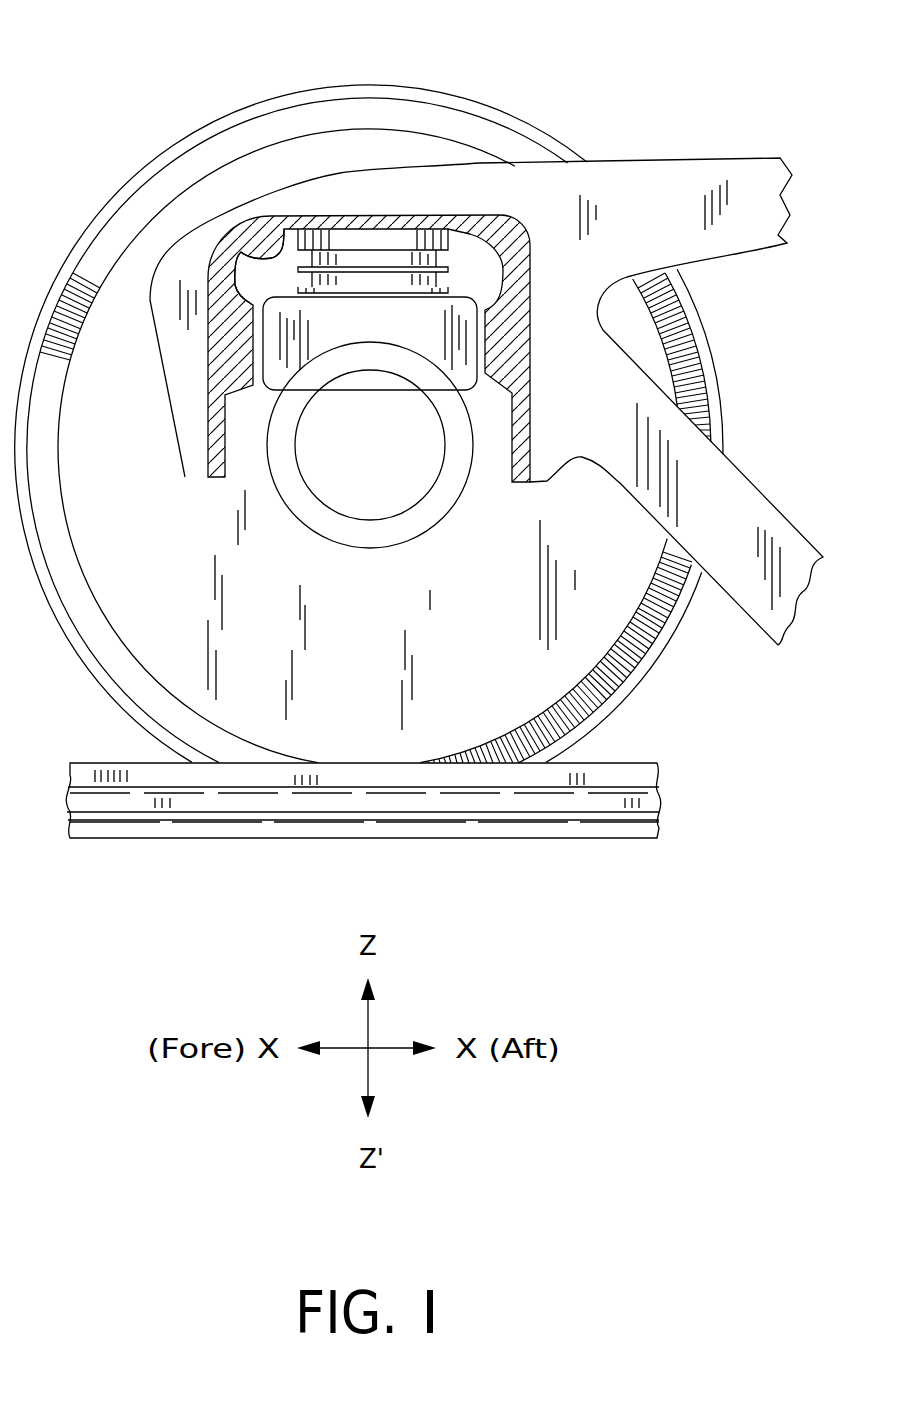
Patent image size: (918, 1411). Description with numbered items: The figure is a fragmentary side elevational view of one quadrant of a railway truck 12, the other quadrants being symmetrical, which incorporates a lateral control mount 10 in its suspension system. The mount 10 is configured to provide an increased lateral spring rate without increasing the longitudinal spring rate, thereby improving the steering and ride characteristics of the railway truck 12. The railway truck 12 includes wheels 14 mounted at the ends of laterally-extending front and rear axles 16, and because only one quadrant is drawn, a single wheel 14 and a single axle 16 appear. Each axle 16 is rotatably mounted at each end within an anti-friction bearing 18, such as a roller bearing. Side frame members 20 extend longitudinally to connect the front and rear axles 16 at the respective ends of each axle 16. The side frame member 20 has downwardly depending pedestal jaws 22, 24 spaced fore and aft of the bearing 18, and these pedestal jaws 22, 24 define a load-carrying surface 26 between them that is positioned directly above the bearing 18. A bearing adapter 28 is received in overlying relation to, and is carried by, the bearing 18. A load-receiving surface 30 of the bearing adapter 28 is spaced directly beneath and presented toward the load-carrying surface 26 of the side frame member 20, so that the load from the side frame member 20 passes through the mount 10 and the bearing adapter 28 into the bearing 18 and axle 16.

The mount 10 is at (388, 240).
The railway truck 12 is at (528, 72).
The wheels 14 is at (482, 672).
The axles 16 is at (395, 490).
The anti-friction bearing 18 is at (318, 520).
The side frame members 20 is at (683, 157).
The pedestal jaw 22 is at (187, 433).
The pedestal jaw 24 is at (580, 460).
The load-carrying surface 26 is at (247, 251).
The bearing adapter 28 is at (463, 342).
The load-receiving surface 30 is at (207, 303).